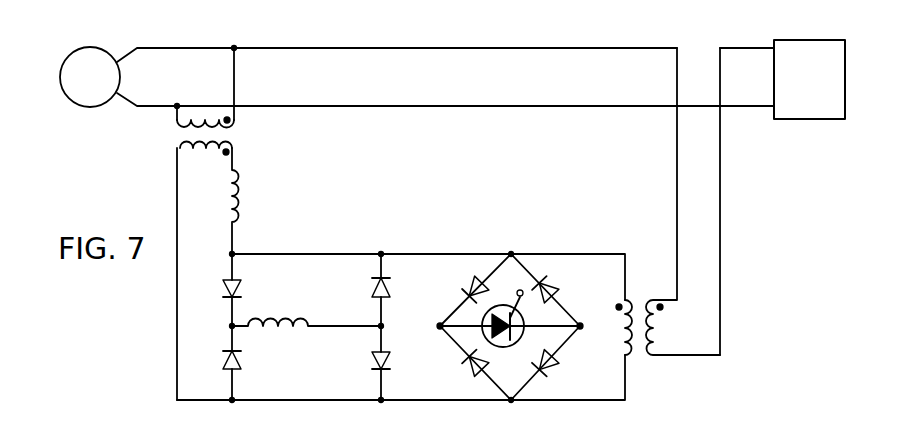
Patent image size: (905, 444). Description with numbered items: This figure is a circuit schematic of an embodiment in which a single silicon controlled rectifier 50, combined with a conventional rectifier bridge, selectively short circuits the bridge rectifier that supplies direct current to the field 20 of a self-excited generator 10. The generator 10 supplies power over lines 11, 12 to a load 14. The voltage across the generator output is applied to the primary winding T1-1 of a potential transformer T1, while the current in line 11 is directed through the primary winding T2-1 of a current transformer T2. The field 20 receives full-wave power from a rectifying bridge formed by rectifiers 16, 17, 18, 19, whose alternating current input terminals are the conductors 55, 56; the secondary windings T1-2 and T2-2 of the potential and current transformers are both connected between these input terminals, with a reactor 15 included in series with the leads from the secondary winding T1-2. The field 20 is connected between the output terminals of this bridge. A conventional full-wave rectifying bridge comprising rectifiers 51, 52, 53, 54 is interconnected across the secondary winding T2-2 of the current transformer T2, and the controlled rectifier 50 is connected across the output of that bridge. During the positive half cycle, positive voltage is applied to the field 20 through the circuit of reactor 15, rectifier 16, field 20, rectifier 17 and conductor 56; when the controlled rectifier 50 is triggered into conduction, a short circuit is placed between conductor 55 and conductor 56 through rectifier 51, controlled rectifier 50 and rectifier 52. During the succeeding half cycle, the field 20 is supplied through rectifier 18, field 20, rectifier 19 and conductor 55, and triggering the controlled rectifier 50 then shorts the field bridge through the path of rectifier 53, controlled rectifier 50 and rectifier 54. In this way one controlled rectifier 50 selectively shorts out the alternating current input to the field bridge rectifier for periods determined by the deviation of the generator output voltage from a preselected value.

The generator 10 is at (63, 55).
The line 11 is at (170, 48).
The line 12 is at (165, 106).
The load 14 is at (774, 41).
The reactor 15 is at (241, 210).
The rectifier 16 is at (224, 292).
The rectifier 17 is at (390, 364).
The rectifier 18 is at (223, 361).
The rectifier 19 is at (371, 291).
The field 20 is at (288, 367).
The controlled rectifier 50 is at (508, 347).
The rectifier 51 is at (468, 283).
The rectifier 52 is at (553, 368).
The rectifier 53 is at (467, 368).
The rectifier 54 is at (550, 284).
The conductor 55 is at (328, 252).
The conductor 56 is at (277, 401).
The potential transformer T1 is at (168, 140).
The primary winding of potential transformer T1-1 is at (238, 124).
The secondary winding of potential transformer T1-2 is at (238, 146).
The current transformer T2 is at (656, 289).
The primary winding of current transformer T2-1 is at (650, 354).
The secondary winding of current transformer T2-2 is at (628, 345).